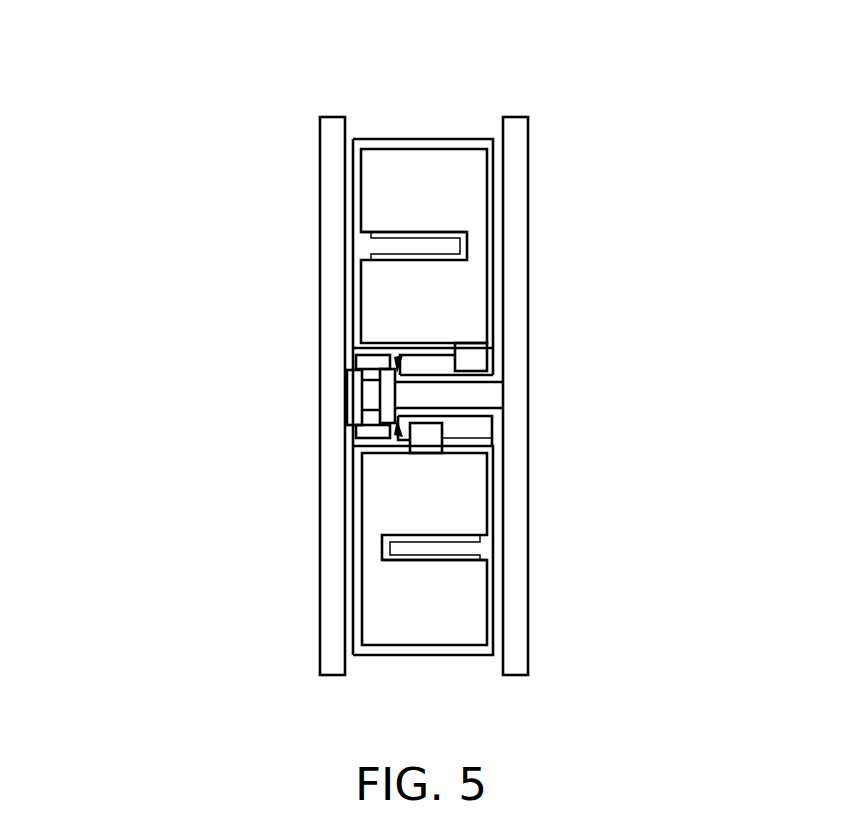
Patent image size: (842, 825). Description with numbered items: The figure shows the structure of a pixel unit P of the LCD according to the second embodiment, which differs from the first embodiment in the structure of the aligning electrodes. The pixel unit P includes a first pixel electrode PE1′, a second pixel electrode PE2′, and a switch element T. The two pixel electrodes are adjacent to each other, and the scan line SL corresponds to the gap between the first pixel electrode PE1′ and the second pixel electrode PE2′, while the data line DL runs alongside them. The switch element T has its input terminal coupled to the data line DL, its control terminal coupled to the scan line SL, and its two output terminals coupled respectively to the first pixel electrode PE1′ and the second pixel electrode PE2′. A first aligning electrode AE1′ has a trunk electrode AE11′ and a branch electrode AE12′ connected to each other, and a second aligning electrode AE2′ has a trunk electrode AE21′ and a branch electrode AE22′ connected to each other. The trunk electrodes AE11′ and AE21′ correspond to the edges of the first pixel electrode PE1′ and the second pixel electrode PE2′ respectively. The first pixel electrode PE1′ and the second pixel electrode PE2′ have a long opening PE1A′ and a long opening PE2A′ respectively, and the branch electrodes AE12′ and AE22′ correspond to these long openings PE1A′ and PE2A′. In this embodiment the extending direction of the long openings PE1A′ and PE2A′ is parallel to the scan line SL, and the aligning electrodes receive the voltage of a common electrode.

The pixel unit P is at (203, 89).
The data line DL is at (326, 145).
The scan line SL is at (496, 396).
The switch element T is at (336, 393).
The first pixel electrode PE1′ is at (371, 156).
The long opening PE1A′ is at (431, 222).
The first aligning electrode AE1′ is at (555, 397).
The trunk electrode AE11′ is at (493, 197).
The branch electrode AE12′ is at (458, 247).
The second pixel electrode PE2′ is at (467, 487).
The long opening PE2A′ is at (432, 572).
The second aligning electrode AE2′ is at (555, 550).
The trunk electrode AE21′ is at (492, 602).
The branch electrode AE22′ is at (455, 550).